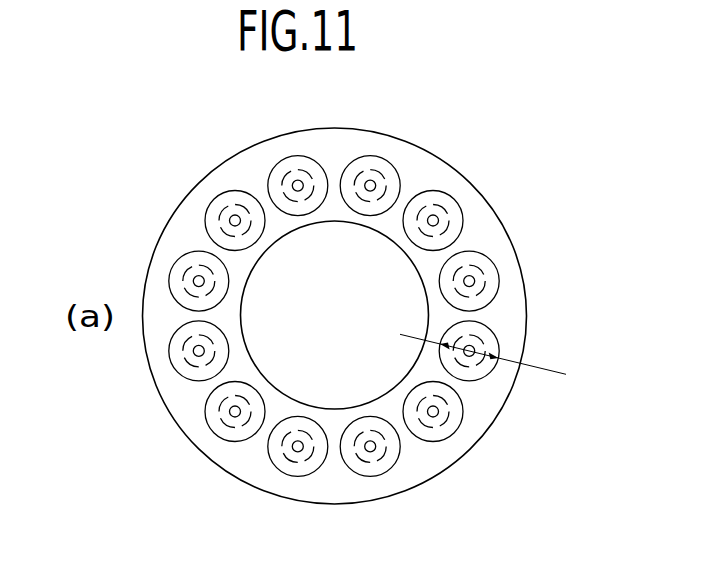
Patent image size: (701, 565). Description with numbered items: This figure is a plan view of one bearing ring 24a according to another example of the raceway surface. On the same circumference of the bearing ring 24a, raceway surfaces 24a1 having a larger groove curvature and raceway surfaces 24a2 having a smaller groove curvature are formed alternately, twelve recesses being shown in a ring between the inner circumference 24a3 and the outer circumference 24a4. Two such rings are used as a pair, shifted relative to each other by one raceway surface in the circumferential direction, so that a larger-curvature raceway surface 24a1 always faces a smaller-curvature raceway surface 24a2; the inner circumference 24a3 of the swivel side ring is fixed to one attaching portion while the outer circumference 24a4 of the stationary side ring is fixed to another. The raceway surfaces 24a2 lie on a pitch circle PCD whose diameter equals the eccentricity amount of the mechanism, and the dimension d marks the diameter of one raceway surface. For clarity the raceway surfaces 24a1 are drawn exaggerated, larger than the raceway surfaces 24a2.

The bearing ring 24a is at (134, 206).
The raceway surface 24a1 is at (386, 164).
The raceway surface 24a2 is at (456, 203).
The inner circumference 24a3 is at (334, 221).
The outer circumference 24a4 is at (524, 281).
The pitch circle PCD is at (473, 384).
The hole diameter d is at (493, 363).